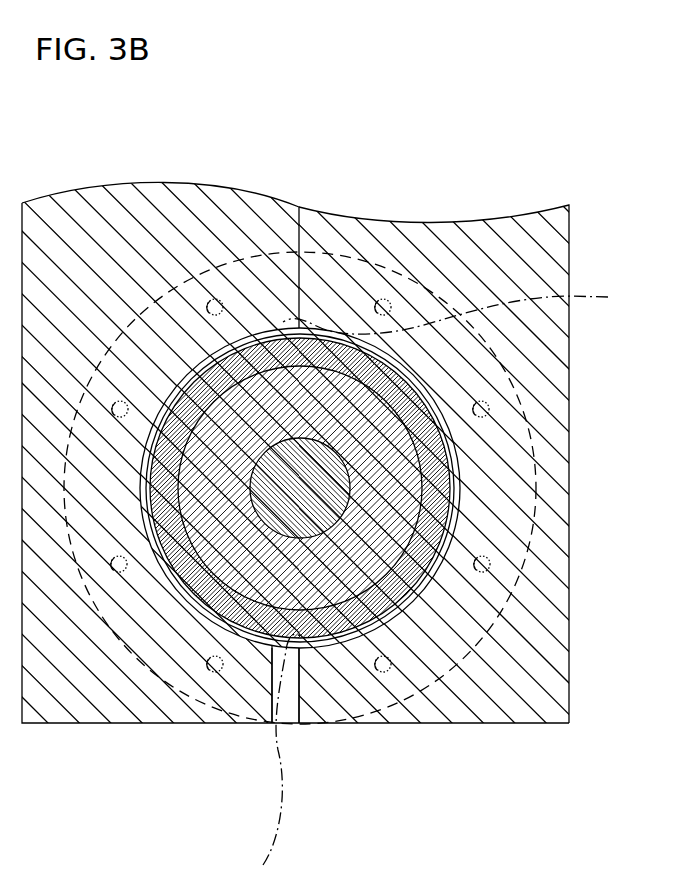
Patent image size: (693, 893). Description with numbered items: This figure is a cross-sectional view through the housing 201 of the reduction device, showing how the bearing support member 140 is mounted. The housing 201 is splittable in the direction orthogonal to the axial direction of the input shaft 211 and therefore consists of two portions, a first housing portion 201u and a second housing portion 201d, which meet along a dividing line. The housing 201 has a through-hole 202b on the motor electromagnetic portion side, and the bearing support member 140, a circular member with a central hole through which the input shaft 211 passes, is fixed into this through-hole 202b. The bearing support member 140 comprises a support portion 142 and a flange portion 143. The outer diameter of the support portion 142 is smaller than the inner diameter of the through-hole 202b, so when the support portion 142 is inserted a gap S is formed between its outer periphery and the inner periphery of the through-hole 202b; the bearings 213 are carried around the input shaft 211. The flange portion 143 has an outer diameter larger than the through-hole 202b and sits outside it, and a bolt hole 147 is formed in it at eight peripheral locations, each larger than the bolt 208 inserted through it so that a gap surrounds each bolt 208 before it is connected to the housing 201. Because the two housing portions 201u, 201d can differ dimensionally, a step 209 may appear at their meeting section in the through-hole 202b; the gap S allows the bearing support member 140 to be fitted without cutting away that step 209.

The housing 201 is at (346, 414).
The second housing portion 201d is at (235, 233).
The first housing portion 201u is at (197, 140).
The through-hole 202b is at (196, 606).
The step 209 is at (443, 585).
The bearings 213 is at (345, 410).
The input shaft 211 is at (300, 488).
The bolt 208 is at (490, 563).
The bolt hole 147 is at (513, 590).
The gap S is at (272, 652).
The support portion 142 is at (330, 645).
The flange portion 143 is at (434, 769).
The bearing support member 140 is at (330, 615).